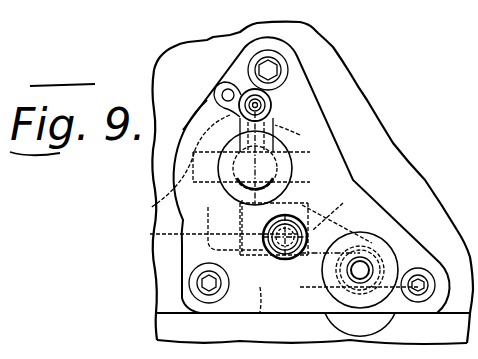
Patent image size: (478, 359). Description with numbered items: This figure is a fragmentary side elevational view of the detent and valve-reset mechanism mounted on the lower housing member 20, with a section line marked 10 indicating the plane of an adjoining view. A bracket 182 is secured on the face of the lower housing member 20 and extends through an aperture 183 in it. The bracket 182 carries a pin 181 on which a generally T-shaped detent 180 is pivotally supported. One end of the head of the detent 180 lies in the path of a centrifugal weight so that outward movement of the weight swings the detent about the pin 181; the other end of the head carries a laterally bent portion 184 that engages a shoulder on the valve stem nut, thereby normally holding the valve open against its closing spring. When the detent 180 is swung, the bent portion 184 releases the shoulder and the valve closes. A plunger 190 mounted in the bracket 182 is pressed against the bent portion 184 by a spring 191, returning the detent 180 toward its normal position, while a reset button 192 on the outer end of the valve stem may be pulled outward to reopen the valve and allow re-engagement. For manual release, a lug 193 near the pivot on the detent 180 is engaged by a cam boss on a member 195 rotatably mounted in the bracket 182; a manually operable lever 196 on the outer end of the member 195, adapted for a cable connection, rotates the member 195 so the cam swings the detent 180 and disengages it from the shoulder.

The section line 10- 10 is at (270, 11).
The lower housing member 20 is at (383, 162).
The detent 180 is at (205, 235).
The pin 181 is at (300, 135).
The bracket 182 is at (200, 182).
The aperture 183 is at (260, 312).
The laterally bent portion 184 is at (320, 237).
The plunger 190 is at (300, 193).
The spring 191 is at (306, 201).
The reset button 192 is at (372, 277).
The lug 193 is at (230, 158).
The member 195 is at (200, 199).
The manually operable lever 196 is at (272, 110).